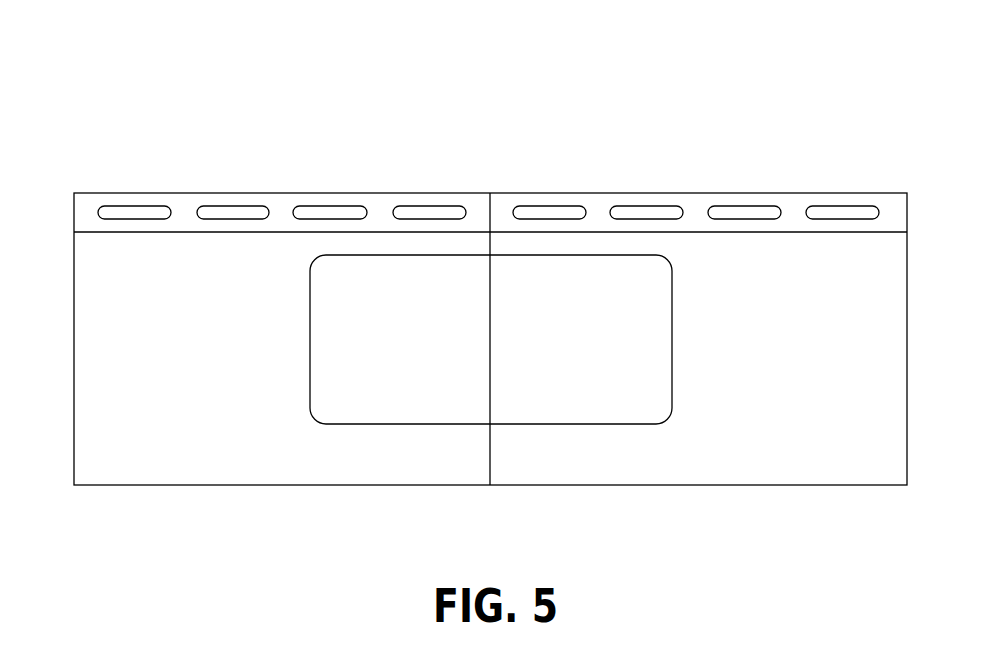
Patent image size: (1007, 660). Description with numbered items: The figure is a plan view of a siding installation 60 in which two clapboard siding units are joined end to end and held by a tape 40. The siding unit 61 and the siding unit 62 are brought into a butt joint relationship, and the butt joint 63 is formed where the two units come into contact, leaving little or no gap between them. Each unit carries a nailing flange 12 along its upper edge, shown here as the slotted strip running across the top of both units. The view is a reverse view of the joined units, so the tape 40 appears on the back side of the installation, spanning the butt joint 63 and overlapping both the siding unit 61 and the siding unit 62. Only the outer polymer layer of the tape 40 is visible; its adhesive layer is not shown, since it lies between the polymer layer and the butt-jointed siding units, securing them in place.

The siding installation 60 is at (368, 78).
The nailing flange 12 is at (74, 219).
The siding unit 61 is at (622, 193).
The siding unit 62 is at (258, 193).
The butt joint 63 is at (490, 407).
The tape 40 is at (596, 358).